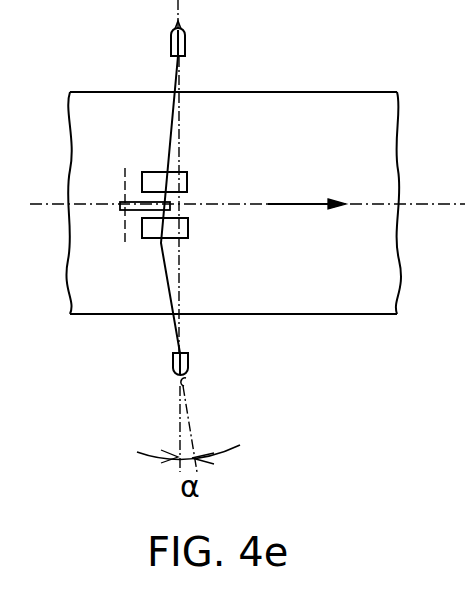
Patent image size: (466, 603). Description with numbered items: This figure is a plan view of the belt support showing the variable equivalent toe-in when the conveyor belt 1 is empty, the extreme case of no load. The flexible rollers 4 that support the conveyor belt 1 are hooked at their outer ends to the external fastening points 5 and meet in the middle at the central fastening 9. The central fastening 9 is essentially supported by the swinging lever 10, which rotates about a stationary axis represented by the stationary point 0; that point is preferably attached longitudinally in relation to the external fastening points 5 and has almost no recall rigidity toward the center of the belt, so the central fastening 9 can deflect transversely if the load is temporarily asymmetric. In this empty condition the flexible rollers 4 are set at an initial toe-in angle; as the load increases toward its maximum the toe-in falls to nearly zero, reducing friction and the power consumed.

The conveyor belt 1 is at (283, 110).
The flexible rollers 4 is at (172, 115).
The external fastening points 5 is at (187, 53).
The central fastening 9 is at (206, 242).
The swinging lever 10 is at (128, 212).
The stationary point 0 is at (125, 194).